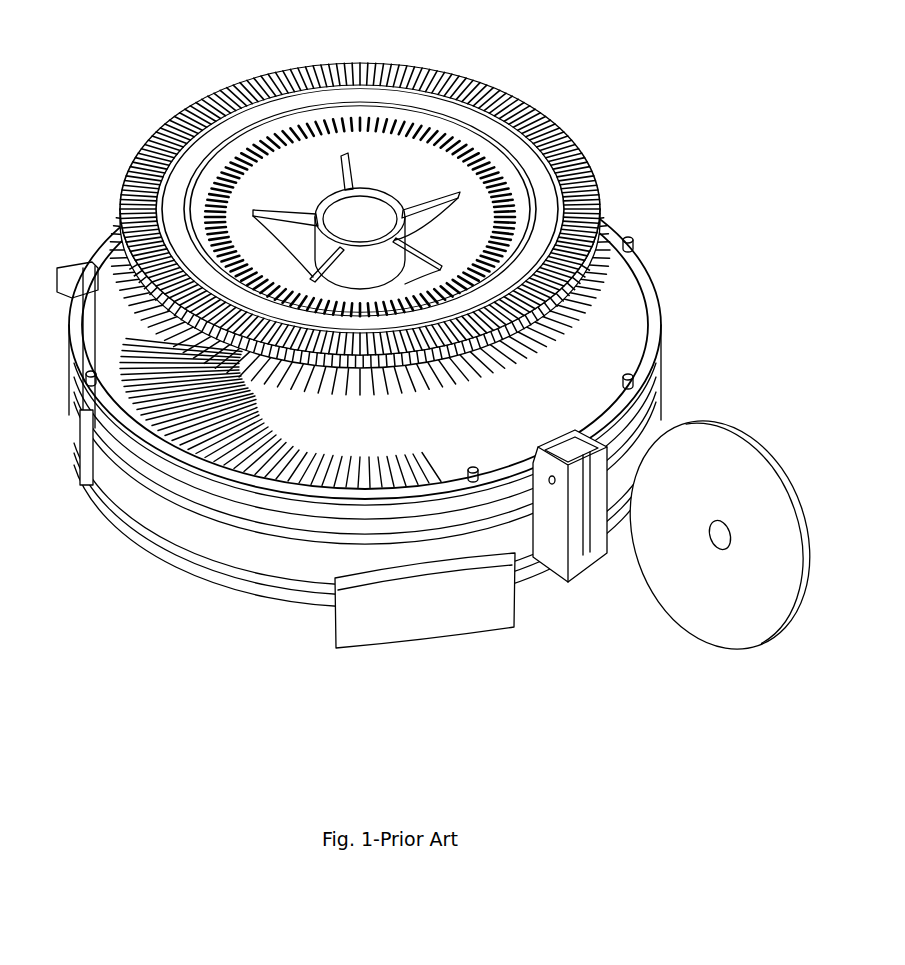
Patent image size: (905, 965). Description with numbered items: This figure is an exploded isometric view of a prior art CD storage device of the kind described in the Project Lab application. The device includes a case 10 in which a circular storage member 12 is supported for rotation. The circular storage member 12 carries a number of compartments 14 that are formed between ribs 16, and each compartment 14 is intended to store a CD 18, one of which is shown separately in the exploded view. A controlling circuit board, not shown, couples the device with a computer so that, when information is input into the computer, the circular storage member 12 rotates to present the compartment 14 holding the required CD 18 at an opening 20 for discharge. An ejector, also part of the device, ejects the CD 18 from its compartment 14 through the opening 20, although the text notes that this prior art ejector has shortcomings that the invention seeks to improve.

The case 10 is at (73, 352).
The circular storage member 12 is at (478, 140).
The compartments 14 is at (577, 320).
The ribs 16 is at (310, 380).
The CD 18 is at (740, 477).
The opening 20 is at (603, 513).